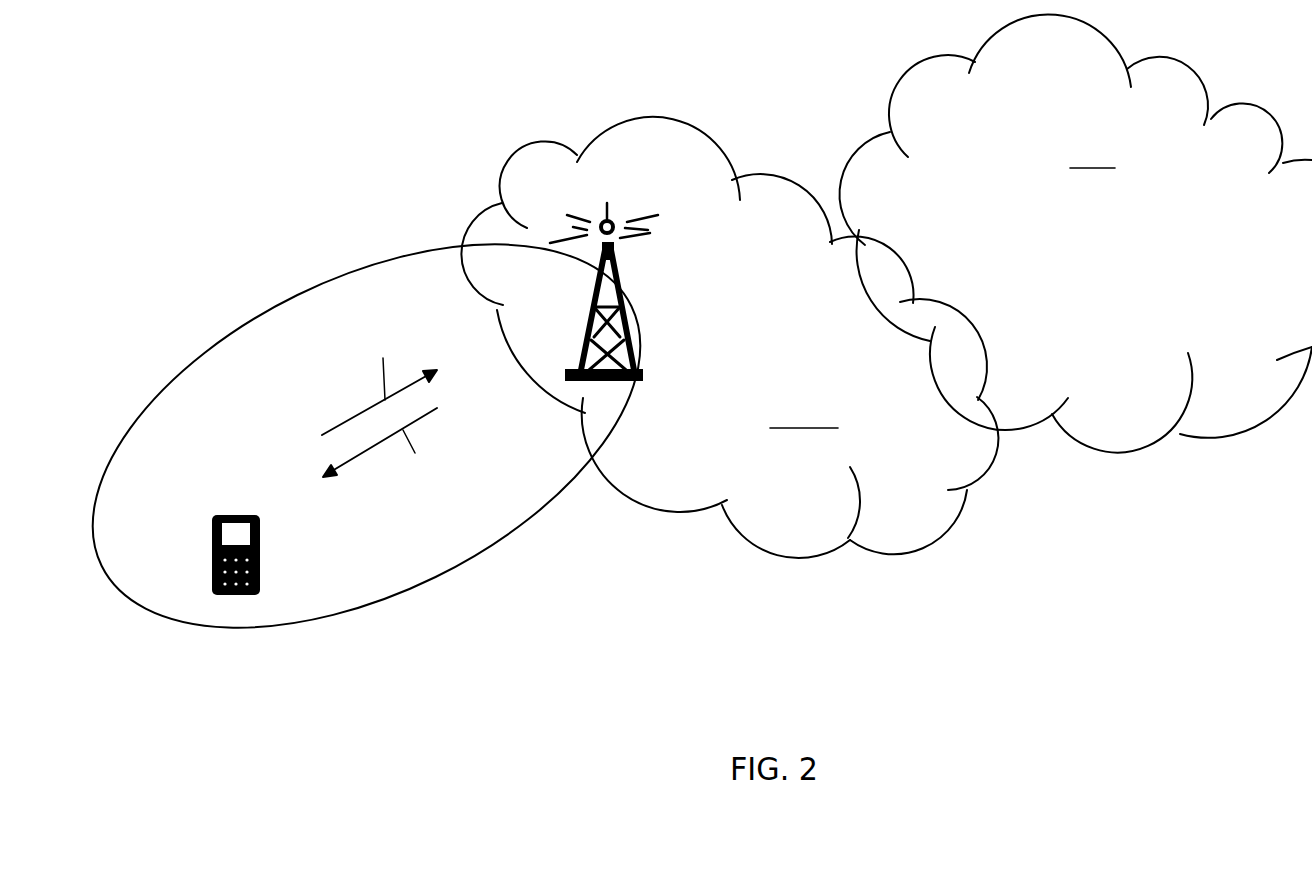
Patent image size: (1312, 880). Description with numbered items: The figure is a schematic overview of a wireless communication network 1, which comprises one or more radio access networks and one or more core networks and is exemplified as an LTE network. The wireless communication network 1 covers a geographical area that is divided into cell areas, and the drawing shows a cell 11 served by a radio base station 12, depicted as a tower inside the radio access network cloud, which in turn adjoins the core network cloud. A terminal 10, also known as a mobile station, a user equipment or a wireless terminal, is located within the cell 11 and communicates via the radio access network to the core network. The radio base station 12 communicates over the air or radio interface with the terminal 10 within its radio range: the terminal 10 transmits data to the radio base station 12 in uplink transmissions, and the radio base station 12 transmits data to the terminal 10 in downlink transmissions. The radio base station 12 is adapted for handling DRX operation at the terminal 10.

The wireless communication network 1 is at (224, 221).
The terminal 10 is at (212, 578).
The cell 11 is at (452, 317).
The radio base station 12 is at (628, 343).